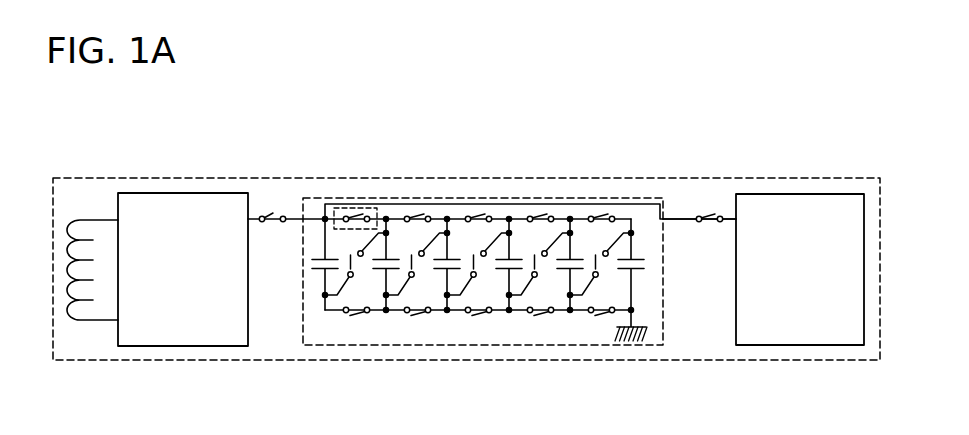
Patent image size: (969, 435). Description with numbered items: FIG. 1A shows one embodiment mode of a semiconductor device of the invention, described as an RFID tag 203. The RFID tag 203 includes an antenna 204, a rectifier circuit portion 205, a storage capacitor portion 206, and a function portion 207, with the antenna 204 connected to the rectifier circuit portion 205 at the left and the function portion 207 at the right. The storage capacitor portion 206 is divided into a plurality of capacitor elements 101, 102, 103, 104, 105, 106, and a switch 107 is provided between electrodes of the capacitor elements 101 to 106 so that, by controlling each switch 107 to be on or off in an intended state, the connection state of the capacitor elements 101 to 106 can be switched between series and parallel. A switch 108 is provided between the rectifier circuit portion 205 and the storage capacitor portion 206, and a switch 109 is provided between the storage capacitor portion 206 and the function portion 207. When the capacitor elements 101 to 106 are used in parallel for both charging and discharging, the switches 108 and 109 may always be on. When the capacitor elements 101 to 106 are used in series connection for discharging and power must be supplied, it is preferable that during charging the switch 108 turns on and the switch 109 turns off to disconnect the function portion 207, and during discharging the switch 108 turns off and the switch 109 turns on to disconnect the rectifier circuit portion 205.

The capacitor element 101 is at (317, 270).
The capacitor element 102 is at (386, 287).
The capacitor element 103 is at (447, 287).
The capacitor element 104 is at (509, 287).
The capacitor element 105 is at (570, 287).
The capacitor element 106 is at (642, 257).
The switch 107 is at (363, 208).
The switch 108 is at (272, 212).
The switch 109 is at (715, 215).
The RFID tag 203 is at (132, 178).
The antenna 204 is at (93, 321).
The rectifier circuit portion 205 is at (183, 269).
The storage capacitor portion 206 is at (307, 198).
The function portion 207 is at (800, 269).